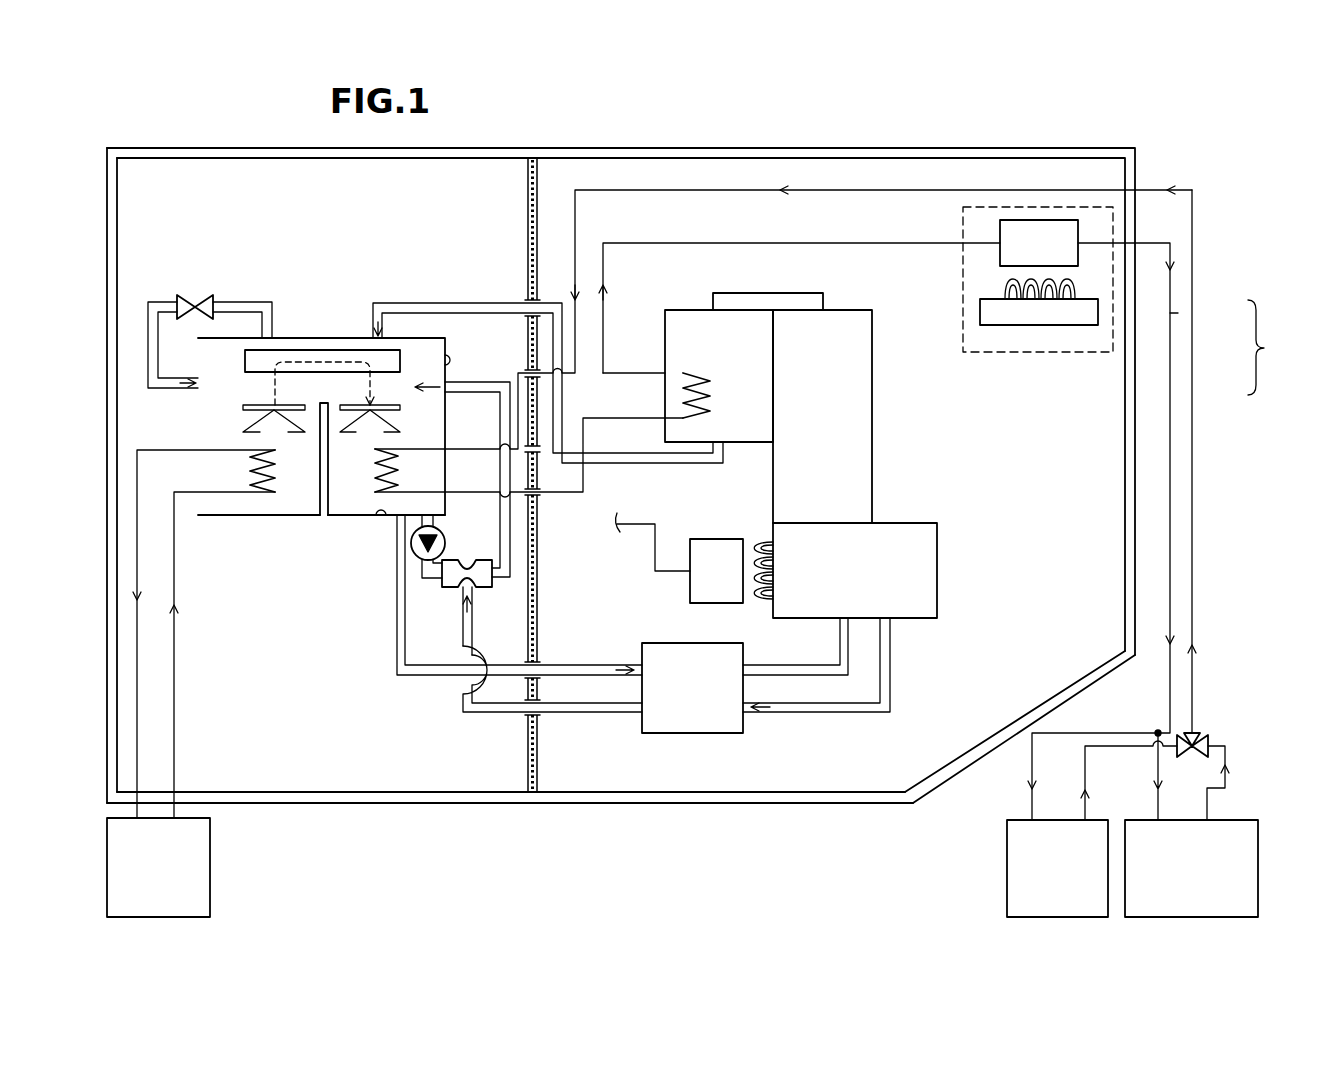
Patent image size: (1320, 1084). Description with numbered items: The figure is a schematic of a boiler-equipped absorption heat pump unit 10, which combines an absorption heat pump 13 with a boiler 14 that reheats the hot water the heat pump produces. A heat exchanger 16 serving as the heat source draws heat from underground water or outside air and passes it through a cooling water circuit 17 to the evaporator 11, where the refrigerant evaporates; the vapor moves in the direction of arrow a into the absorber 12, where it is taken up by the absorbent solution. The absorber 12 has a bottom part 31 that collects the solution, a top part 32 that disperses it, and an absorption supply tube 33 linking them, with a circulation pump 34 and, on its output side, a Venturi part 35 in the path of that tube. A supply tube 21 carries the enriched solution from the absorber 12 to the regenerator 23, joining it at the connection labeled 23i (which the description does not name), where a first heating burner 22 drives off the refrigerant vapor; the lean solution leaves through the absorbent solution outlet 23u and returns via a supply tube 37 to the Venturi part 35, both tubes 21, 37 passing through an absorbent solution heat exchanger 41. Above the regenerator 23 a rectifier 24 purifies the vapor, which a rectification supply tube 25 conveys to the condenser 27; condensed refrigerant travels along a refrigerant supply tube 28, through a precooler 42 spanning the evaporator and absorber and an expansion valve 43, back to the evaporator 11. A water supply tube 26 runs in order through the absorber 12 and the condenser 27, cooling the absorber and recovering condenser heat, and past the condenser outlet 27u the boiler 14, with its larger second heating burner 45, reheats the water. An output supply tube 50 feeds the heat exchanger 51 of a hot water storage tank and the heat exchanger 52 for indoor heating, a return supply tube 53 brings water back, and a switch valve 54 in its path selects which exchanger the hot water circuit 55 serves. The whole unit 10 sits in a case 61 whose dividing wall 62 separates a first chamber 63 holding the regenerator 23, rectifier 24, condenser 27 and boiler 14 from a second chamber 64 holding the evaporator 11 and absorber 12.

The absorption heat pump unit 10 is at (1137, 122).
The evaporator 11 is at (280, 515).
The absorber 12 is at (348, 515).
The absorption heat pump 13 is at (621, 488).
The boiler 14 is at (992, 176).
The heat exchanger 16 is at (210, 865).
The cooling water circuit 17 is at (137, 665).
The supply tube 21 is at (423, 675).
The first heating burner 22 is at (700, 592).
The regenerator 23 is at (937, 572).
The regenerator inlet 23i is at (852, 622).
The absorbent solution outlet 23u is at (890, 622).
The rectifier 24 is at (872, 425).
The rectification supply tube 25 is at (775, 293).
The water supply tube 26 is at (850, 243).
The condenser 27 is at (665, 315).
The outlet 27u is at (665, 373).
The refrigerant supply tube 28 is at (152, 300).
The bottom part 31 is at (386, 515).
The top part 32 is at (448, 360).
The absorption supply tube 33 is at (430, 580).
The circulation pump 34 is at (440, 535).
The Venturi part 35 is at (447, 599).
The supply tube 37 is at (805, 712).
The absorbent solution heat exchanger 41 is at (693, 733).
The precooler 42 is at (312, 348).
The expansion valve 43 is at (205, 300).
The second heating burner 45 is at (980, 313).
The output supply tube 50 is at (1178, 313).
The heat exchanger of a hot water storage tank 51 is at (1145, 820).
The heat exchanger for indoor heating 52 is at (1020, 820).
The return supply tube 53 is at (1192, 383).
The switch valve 54 is at (1197, 735).
The hot water circuit 55 is at (1277, 347).
The case 61 is at (625, 797).
The dividing wall 62 is at (528, 203).
The first chamber 63 is at (882, 755).
The second chamber 64 is at (381, 765).
The arrow a is at (348, 358).